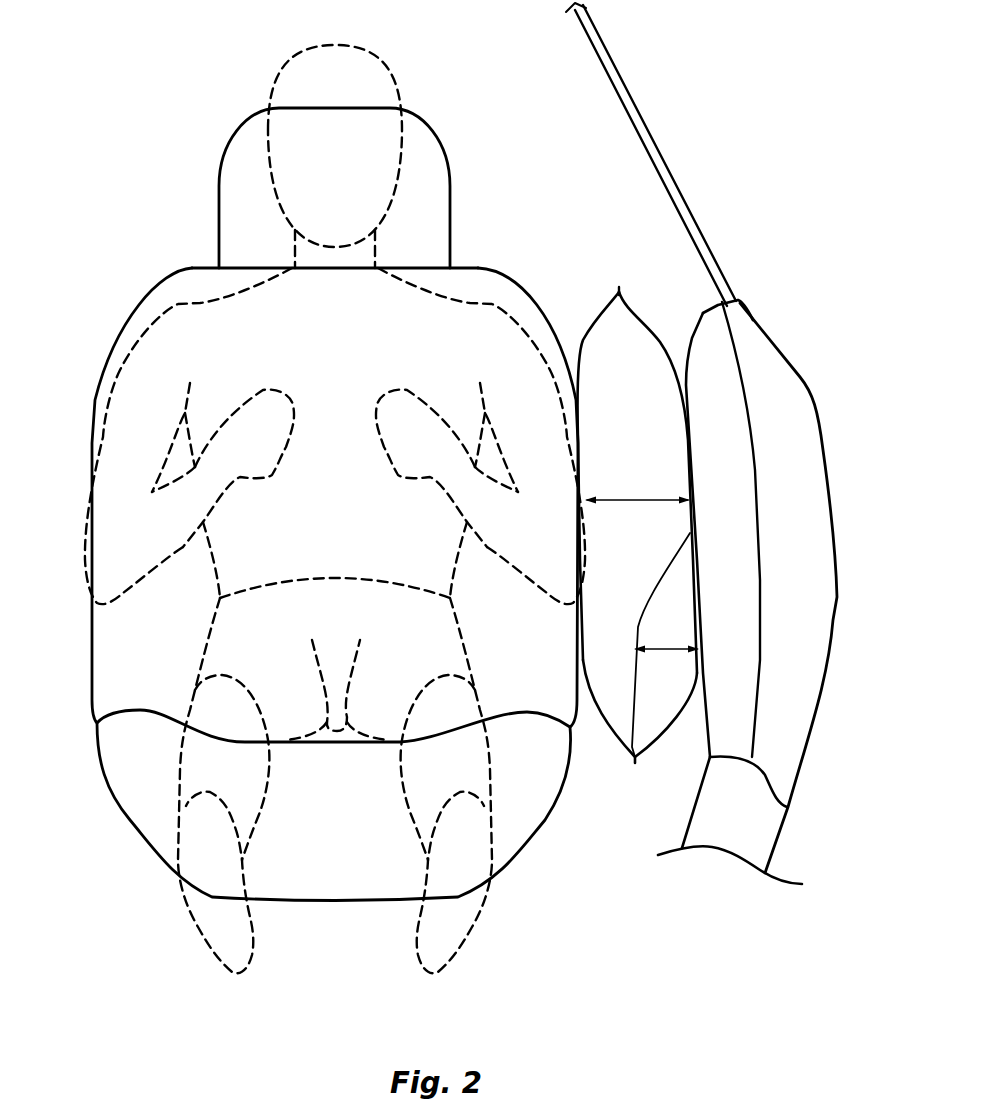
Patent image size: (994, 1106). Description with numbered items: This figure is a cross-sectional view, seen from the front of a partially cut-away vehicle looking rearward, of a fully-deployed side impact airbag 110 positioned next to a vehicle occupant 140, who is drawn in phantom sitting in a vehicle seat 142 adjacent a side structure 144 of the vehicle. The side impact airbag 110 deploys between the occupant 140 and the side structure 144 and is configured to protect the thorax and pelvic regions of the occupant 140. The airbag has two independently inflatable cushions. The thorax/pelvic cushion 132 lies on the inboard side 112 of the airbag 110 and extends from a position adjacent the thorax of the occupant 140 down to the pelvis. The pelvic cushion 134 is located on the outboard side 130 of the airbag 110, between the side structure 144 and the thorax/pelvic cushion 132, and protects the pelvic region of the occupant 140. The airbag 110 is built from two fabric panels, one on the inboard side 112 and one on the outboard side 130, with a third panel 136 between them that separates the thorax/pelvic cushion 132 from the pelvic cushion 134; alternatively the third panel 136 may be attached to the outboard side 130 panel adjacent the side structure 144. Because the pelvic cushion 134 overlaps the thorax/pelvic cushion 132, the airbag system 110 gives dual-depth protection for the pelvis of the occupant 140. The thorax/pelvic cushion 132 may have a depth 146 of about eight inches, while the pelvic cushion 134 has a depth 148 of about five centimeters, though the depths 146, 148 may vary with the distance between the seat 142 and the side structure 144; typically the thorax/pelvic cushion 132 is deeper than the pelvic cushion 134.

The side impact airbag 110 is at (636, 463).
The inboard side 112 is at (339, 556).
The outboard side 130 is at (722, 443).
The thorax/pelvic cushion 132 is at (600, 355).
The pelvic cushion 134 is at (660, 712).
The third panel 136 is at (640, 620).
The vehicle occupant 140 is at (193, 325).
The vehicle seat 142 is at (335, 893).
The side structure 144 is at (828, 482).
The depth of thorax/pelvic cushion 146 is at (625, 498).
The depth of pelvic cushion 148 is at (665, 648).